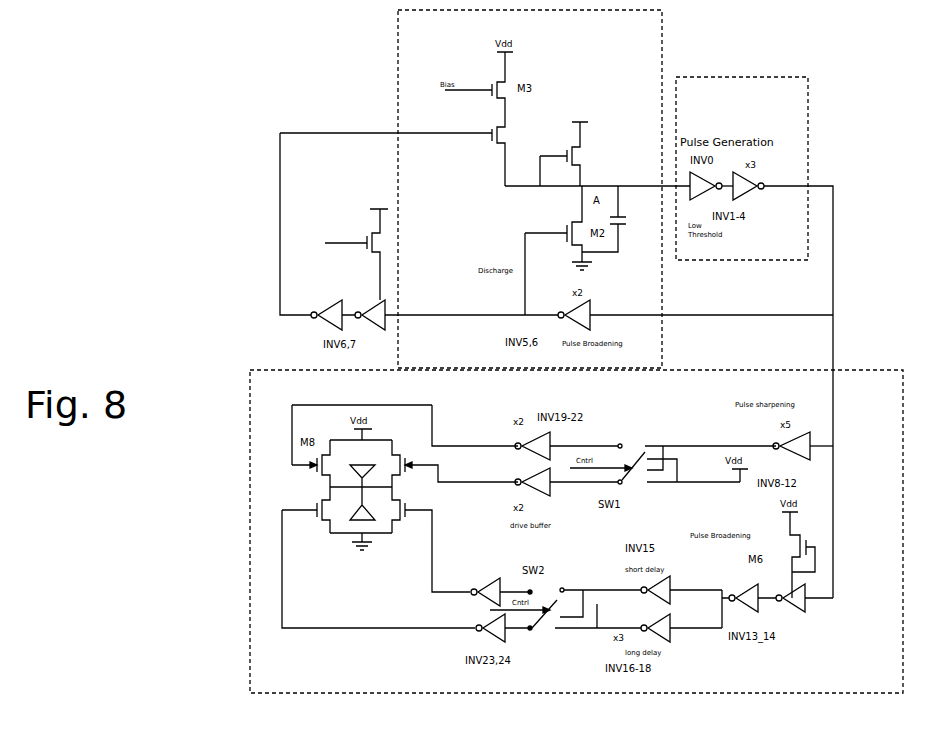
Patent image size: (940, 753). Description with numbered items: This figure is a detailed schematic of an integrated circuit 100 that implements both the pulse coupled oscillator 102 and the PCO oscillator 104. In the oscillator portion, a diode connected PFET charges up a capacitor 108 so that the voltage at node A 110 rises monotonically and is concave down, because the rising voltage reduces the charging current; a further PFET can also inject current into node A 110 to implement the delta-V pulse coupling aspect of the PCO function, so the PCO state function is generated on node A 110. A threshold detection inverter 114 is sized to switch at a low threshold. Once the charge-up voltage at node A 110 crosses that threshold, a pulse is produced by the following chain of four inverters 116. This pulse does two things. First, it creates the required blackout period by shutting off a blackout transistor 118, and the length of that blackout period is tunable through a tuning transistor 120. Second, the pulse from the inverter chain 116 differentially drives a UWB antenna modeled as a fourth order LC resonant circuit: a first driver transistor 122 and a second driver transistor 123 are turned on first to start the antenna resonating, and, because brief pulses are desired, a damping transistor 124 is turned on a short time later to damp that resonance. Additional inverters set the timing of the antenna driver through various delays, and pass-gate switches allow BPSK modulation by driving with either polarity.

The integrated circuit 100 is at (216, 82).
The pulse coupled oscillator 102 is at (255, 385).
The PCO oscillator 104 is at (647, 60).
The capacitor C1 108 is at (614, 224).
The node A 110 is at (578, 190).
The inverter INV0 114 is at (690, 186).
The inverters INV1-4 116 is at (757, 175).
The transistor M4 118 is at (487, 128).
The transistor M11 120 is at (372, 233).
The transistor M7 122 is at (420, 453).
The transistor M10 123 is at (313, 510).
The transistor M9 124 is at (415, 508).